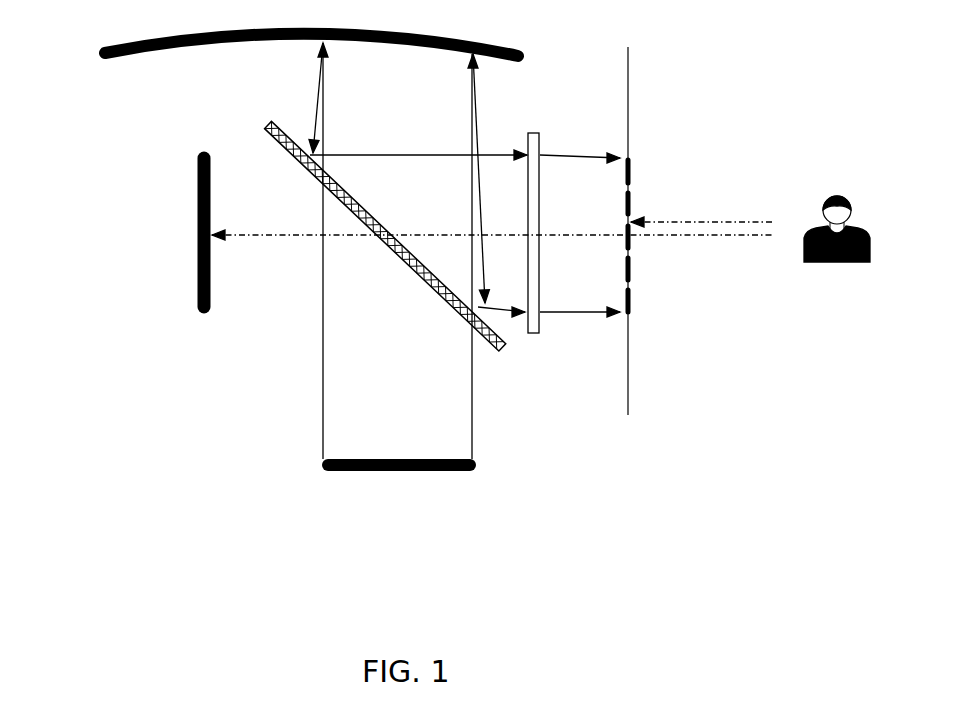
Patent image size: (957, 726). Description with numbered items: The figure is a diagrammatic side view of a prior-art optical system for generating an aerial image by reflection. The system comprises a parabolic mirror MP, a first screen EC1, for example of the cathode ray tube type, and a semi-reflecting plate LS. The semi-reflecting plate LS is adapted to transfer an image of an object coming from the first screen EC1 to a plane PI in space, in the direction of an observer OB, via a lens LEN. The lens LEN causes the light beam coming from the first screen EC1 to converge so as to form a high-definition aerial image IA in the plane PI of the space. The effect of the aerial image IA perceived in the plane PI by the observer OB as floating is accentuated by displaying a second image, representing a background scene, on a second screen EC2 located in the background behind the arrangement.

The parabolic mirror MP is at (118, 44).
The semi-reflecting plate LS is at (268, 122).
The first screen EC1 is at (337, 472).
The second screen EC2 is at (200, 288).
The lens LEN is at (540, 142).
The plane PI is at (628, 73).
The aerial image IA is at (628, 193).
The observer OB is at (837, 242).